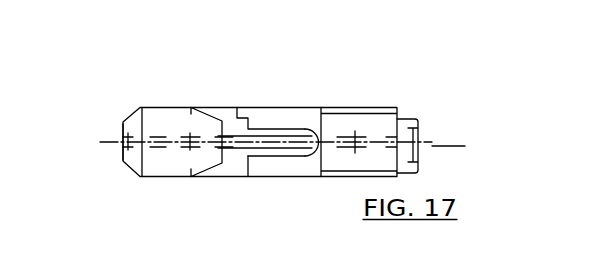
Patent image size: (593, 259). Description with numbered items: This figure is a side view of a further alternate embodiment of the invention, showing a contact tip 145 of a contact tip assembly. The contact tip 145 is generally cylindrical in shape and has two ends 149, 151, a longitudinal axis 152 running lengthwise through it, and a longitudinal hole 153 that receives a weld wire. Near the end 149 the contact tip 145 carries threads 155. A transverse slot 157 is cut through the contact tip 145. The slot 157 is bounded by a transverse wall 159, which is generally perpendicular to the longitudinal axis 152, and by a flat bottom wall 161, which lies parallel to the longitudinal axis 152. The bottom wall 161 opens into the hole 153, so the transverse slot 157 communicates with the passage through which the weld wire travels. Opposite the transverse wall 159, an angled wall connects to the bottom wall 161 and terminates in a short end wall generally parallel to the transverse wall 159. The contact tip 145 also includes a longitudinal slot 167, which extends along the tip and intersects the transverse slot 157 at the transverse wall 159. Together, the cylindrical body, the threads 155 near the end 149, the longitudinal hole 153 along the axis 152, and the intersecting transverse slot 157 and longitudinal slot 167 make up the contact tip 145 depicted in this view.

The contact tip 145 is at (165, 177).
The end 149 is at (418, 137).
The end 151 is at (123, 125).
The longitudinal axis 152 is at (452, 146).
The longitudinal hole 153 is at (358, 125).
The threads 155 is at (388, 108).
The transverse slot 157 is at (240, 163).
The transverse wall 159 is at (237, 112).
The flat bottom wall 161 is at (212, 108).
The longitudinal slot 167 is at (275, 156).